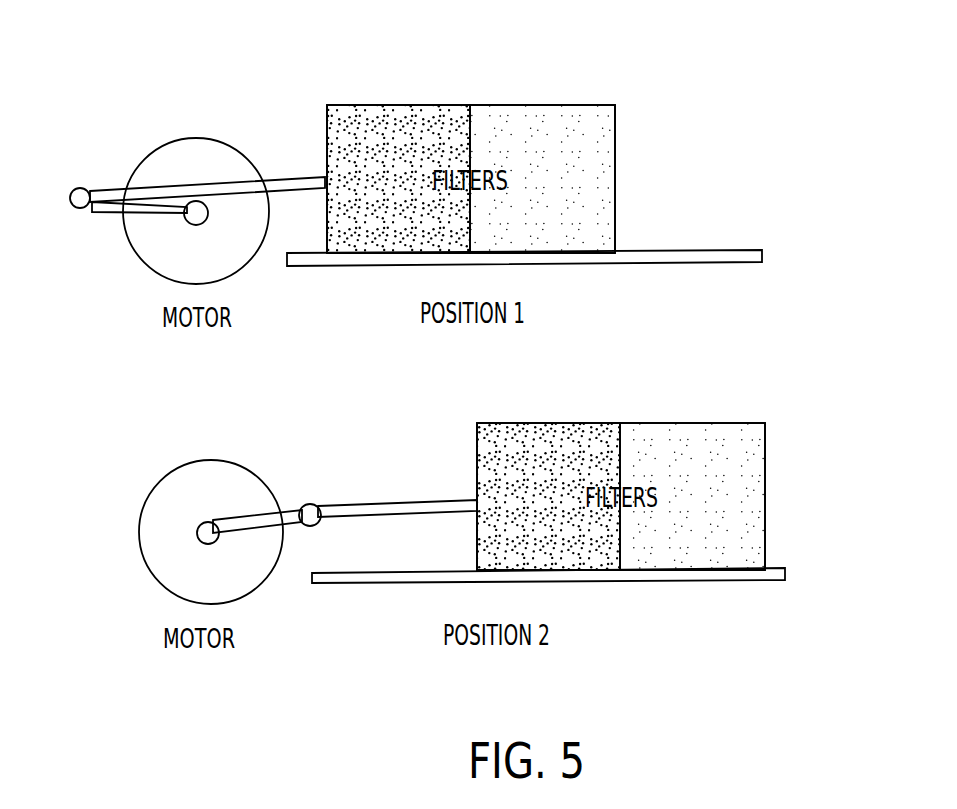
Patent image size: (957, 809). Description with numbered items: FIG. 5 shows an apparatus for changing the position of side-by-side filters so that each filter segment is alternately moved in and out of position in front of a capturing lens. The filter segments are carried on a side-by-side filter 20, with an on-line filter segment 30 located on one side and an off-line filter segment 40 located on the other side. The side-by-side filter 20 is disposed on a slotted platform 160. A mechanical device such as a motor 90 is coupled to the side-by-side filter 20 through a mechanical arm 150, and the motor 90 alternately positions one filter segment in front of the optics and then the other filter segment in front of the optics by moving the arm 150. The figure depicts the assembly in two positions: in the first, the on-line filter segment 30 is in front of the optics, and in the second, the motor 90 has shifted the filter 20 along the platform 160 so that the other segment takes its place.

The side-by-side filter 20 is at (437, 110).
The on-line filter segment 30 is at (392, 122).
The off-line filter segment 40 is at (593, 118).
The motor 90 is at (195, 137).
The mechanical arm 150 is at (150, 203).
The slotted platform 160 is at (762, 256).